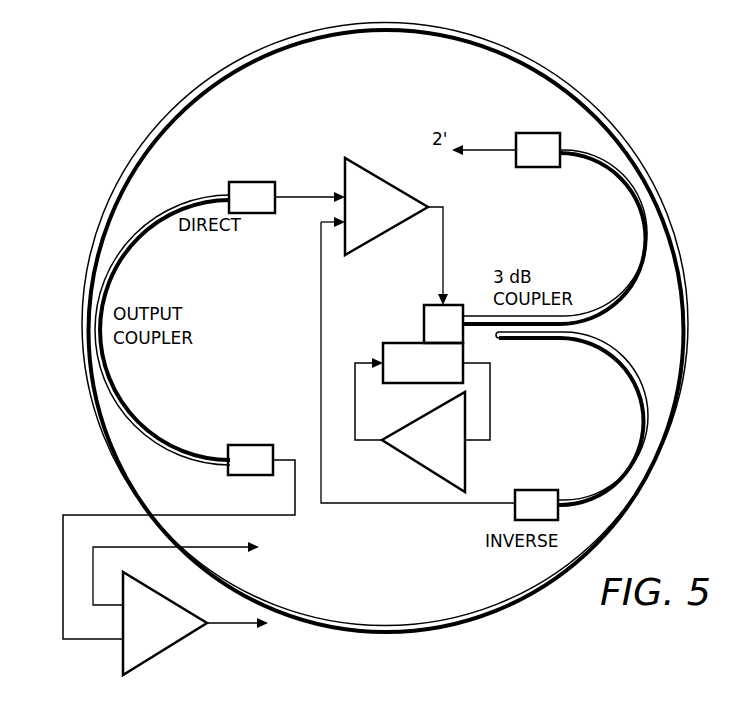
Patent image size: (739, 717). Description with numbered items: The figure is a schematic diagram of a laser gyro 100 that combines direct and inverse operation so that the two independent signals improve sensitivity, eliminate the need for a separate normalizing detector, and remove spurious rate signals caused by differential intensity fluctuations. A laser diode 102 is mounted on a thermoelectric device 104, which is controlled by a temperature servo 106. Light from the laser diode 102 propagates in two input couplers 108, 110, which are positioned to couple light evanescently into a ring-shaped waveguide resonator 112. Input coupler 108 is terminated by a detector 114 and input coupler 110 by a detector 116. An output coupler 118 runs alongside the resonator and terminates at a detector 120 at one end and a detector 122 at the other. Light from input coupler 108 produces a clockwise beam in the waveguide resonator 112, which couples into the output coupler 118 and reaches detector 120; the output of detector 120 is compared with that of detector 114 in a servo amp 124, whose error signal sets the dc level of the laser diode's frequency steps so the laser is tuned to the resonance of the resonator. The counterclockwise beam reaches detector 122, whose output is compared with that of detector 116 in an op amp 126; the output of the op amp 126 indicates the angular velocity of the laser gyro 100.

The laser gyro 100 is at (173, 100).
The waveguide resonator 112 is at (570, 86).
The laser diode 102 is at (456, 303).
The thermoelectric device 104 is at (424, 329).
The temperature servo 106 is at (342, 394).
The input coupler 108 is at (604, 354).
The input coupler 110 is at (640, 258).
The detector 114 is at (578, 474).
The detector 116 is at (537, 168).
The output coupler 118 is at (153, 431).
The detector 120 is at (257, 181).
The detector 122 is at (240, 478).
The servo amp 124 is at (389, 184).
The op amp 126 is at (170, 602).